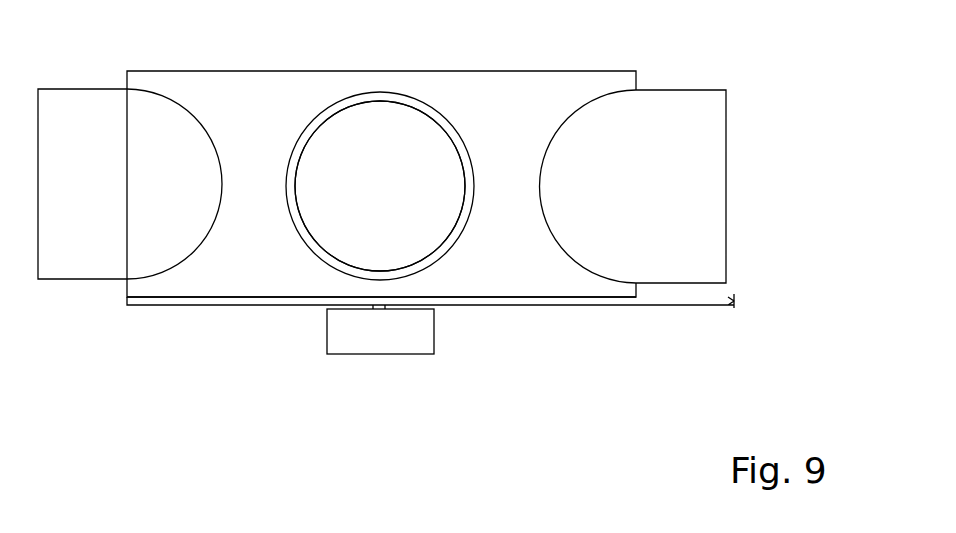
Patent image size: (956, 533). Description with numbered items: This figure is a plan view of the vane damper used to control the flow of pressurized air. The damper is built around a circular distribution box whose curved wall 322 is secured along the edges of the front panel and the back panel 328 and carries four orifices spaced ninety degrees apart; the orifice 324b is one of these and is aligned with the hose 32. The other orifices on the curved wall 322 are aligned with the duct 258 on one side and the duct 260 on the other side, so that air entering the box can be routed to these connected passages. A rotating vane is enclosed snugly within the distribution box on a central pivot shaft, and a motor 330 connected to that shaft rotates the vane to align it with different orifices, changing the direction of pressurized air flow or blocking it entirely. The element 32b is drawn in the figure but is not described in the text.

The hose 32 is at (302, 128).
The orifice 324b is at (378, 172).
The housing body 32b is at (421, 71).
The duct 260 is at (655, 106).
The duct 258 is at (120, 279).
The curved wall 322 is at (258, 283).
The motor 330 is at (410, 354).
The back panel 328 is at (623, 306).